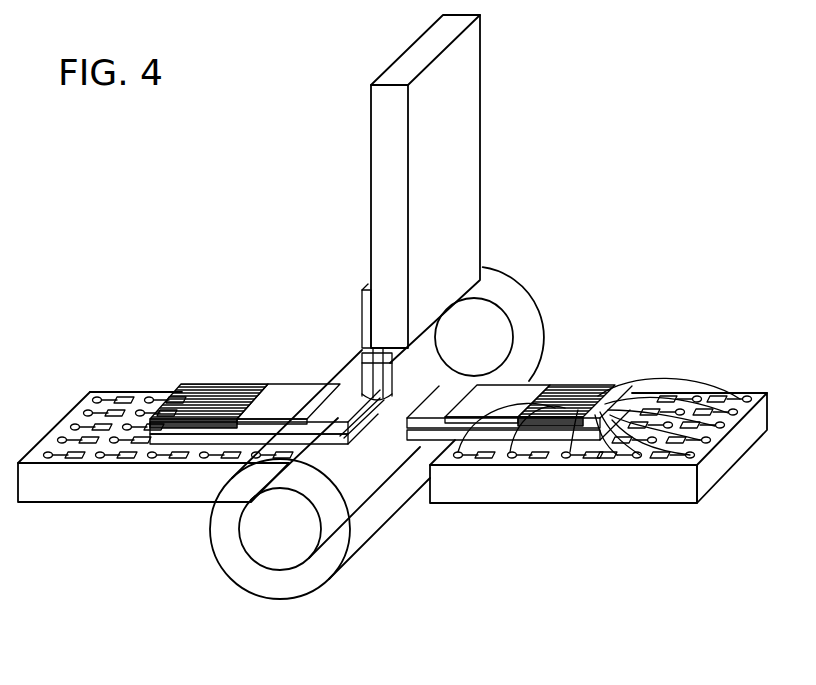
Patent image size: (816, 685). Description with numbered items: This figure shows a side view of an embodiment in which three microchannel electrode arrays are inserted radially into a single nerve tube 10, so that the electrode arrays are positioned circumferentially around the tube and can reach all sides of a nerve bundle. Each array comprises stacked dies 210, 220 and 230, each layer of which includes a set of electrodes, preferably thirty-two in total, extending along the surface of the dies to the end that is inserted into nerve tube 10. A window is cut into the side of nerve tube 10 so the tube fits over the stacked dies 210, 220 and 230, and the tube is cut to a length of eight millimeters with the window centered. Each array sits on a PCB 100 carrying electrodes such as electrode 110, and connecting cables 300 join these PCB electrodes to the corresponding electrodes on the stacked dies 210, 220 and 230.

The nerve tube 10 is at (278, 600).
The PCB 100 is at (468, 122).
The electrode 110 is at (113, 397).
The stacked die 210 is at (362, 312).
The stacked die 220 is at (366, 353).
The stacked die 230 is at (418, 352).
The connecting cables 300 is at (682, 387).